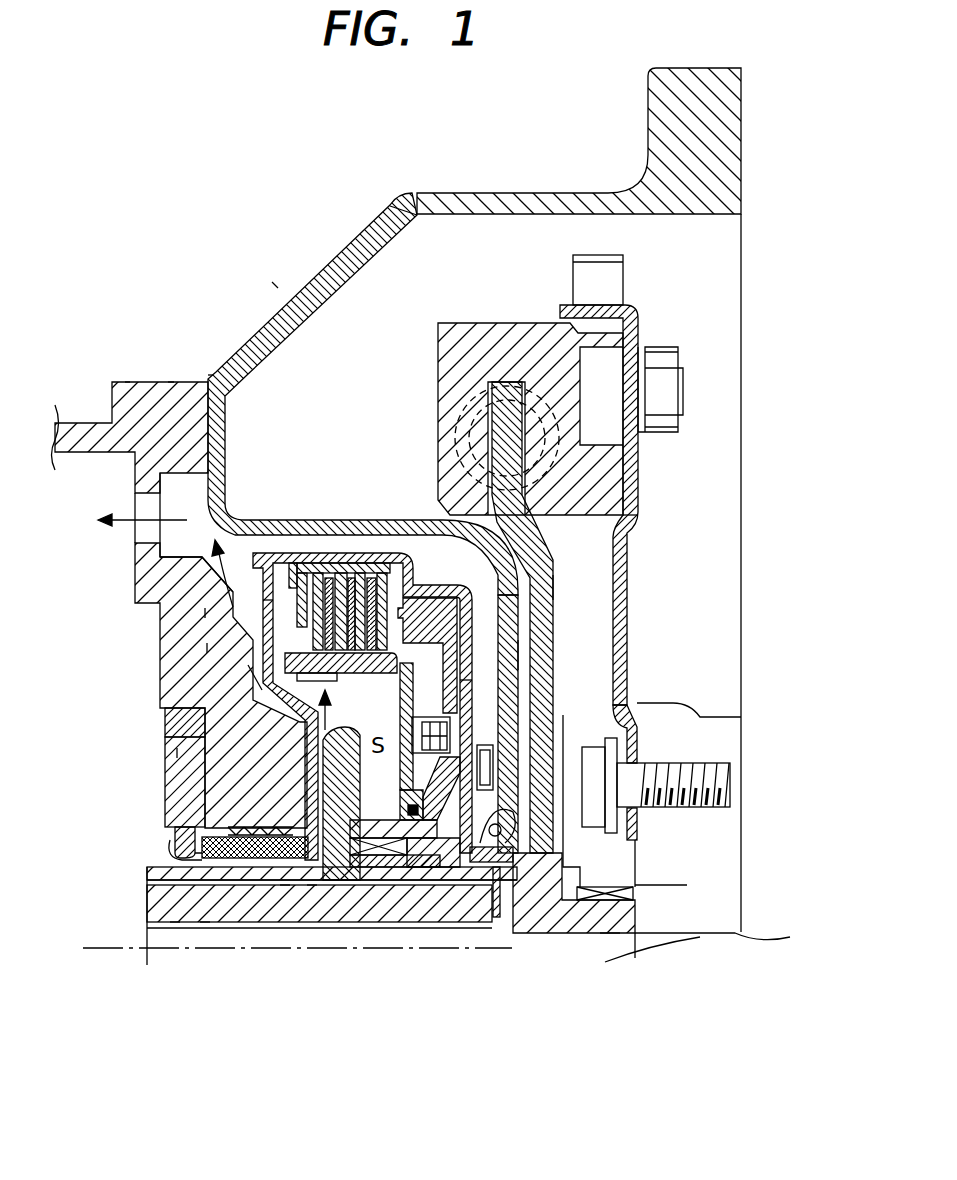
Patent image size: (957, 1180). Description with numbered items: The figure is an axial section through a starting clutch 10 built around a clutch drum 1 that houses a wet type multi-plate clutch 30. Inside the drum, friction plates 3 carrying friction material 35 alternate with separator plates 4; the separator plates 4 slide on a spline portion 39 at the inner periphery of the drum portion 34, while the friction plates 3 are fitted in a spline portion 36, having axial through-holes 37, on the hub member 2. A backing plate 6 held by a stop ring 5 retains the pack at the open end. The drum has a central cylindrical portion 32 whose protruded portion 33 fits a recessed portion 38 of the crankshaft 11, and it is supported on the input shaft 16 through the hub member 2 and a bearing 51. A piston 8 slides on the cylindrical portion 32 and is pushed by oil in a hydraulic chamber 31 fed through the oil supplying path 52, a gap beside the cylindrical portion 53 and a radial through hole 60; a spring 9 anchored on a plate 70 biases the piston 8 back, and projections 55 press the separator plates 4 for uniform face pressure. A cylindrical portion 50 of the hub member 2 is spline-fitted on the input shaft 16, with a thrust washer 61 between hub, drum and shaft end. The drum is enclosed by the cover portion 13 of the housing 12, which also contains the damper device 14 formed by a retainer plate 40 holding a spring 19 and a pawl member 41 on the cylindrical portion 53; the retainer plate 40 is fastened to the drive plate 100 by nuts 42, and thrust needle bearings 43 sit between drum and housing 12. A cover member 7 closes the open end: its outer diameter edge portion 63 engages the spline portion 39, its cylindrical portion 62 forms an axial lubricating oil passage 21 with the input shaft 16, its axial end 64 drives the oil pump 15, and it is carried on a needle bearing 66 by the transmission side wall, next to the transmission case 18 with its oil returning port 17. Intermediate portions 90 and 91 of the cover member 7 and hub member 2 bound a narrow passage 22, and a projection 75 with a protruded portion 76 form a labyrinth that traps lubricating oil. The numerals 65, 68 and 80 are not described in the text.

The clutch drum 1 is at (472, 680).
The hub member 2 is at (340, 800).
The friction plates 3 is at (207, 648).
The separator plates 4 is at (560, 545).
The stop ring 5 is at (205, 560).
The backing plate 6 is at (205, 613).
The cover member 7 is at (230, 750).
The piston 8 is at (410, 612).
The spring 9 is at (500, 725).
The starting clutch 10 is at (272, 282).
The crankshaft 11 is at (732, 895).
The housing 12 is at (450, 200).
The cover portion 13 is at (400, 518).
The damper device 14 is at (436, 312).
The oil pump 15 is at (167, 785).
The input shaft 16 is at (160, 913).
The oil returning port 17 is at (140, 503).
The transmission case 18 is at (108, 385).
The spring 19 is at (547, 478).
The axial lubricating oil passage 21 is at (285, 900).
The narrow passage 22 is at (172, 788).
The wet type multi-plate clutch 30 is at (297, 540).
The hydraulic chamber 31 is at (458, 935).
The cylindrical portion 32 is at (312, 900).
The protruded portion 33 is at (610, 930).
The drum portion 34 is at (323, 562).
The friction material 35 is at (518, 655).
The spline portion 36 is at (290, 672).
The axial through-holes 37 is at (170, 720).
The recessed portion 38 is at (640, 856).
The spline portion 39 is at (262, 590).
The retainer plate 40 is at (638, 337).
The pawl member 41 is at (553, 583).
The nuts 42 is at (680, 357).
The thrust needle bearings 43 is at (600, 745).
The cylindrical portion 50 is at (368, 940).
The bearing 51 is at (350, 900).
The oil supplying path 52 is at (175, 935).
The cylindrical portion 53 is at (552, 920).
The projections 55 is at (358, 560).
The radial through hole 60 is at (437, 923).
The thrust washer 61 is at (497, 935).
The cylindrical portion 62 is at (248, 900).
The outer diameter edge portion 63 is at (212, 372).
The axial end 64 is at (170, 857).
The seal 65 is at (127, 380).
The needle bearing 66 is at (205, 930).
The bushing 68 is at (171, 380).
The plate 70 is at (390, 940).
The projection 75 is at (255, 706).
The annular protruded portion 76 is at (177, 753).
The oil passage 80 is at (233, 607).
The intermediate portion 90 is at (215, 825).
The intermediate portion 91 is at (645, 790).
The drive plate 100 is at (638, 518).